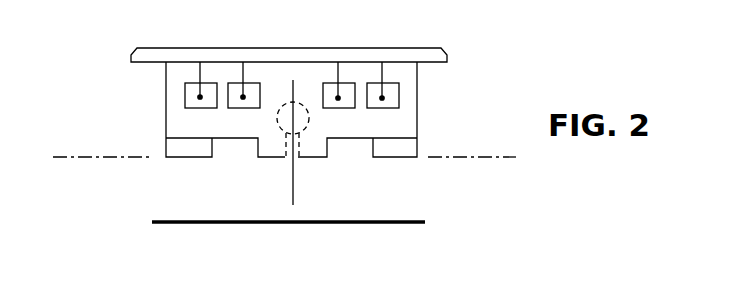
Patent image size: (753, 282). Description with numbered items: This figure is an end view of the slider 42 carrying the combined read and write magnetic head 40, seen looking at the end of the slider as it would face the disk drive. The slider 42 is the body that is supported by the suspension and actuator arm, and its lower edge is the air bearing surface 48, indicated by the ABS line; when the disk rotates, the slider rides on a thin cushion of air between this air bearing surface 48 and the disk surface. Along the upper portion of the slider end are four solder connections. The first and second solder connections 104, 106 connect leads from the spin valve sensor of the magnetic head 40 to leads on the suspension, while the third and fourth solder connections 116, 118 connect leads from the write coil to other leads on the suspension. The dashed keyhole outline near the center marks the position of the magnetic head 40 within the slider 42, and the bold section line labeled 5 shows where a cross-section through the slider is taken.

The slider 42 is at (166, 97).
The first solder connection 104 is at (186, 88).
The third solder connection 116 is at (230, 90).
The fourth solder connection 118 is at (324, 83).
The second solder connection 106 is at (367, 83).
The magnetic head 40 is at (286, 157).
The air bearing surface 48 is at (79, 157).
The section line for FIG. 5 is at (173, 225).